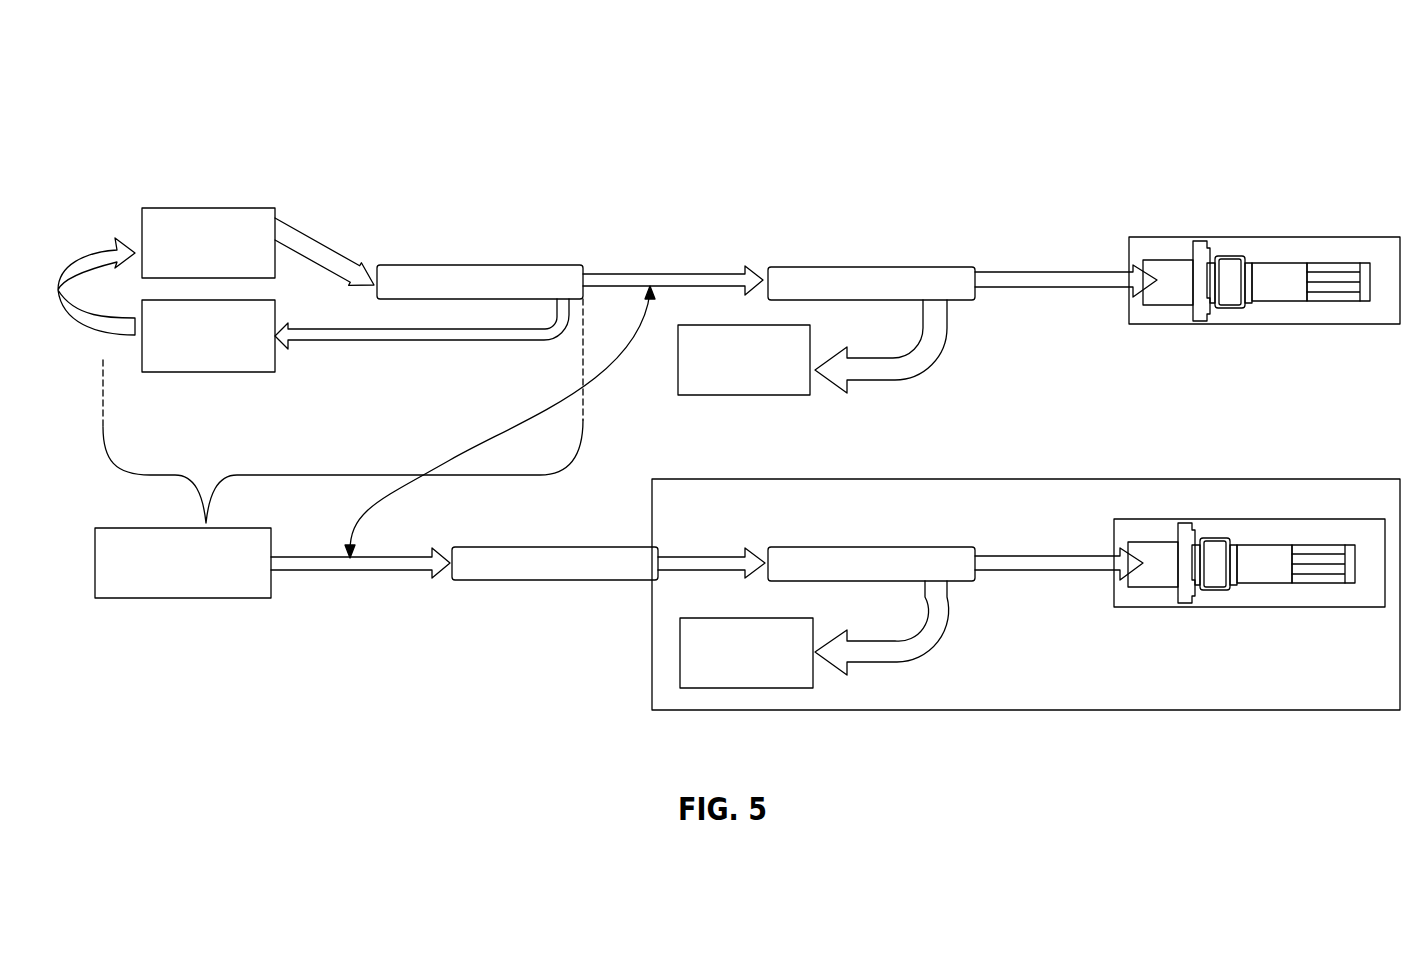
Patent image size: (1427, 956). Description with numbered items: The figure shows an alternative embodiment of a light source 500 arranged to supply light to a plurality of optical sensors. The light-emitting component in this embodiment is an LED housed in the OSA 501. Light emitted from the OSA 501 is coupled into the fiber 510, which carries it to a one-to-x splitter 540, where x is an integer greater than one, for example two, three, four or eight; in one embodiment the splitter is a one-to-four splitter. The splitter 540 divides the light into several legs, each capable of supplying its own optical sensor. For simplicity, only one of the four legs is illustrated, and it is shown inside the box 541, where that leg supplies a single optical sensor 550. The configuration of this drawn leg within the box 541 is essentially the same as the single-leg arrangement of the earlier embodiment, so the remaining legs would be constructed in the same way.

The light source 500 is at (572, 174).
The OSA 501 is at (120, 600).
The fiber 510 is at (337, 573).
The 1:x splitter 540 is at (517, 581).
The box 541 is at (952, 479).
The optical sensor 550 is at (1235, 542).